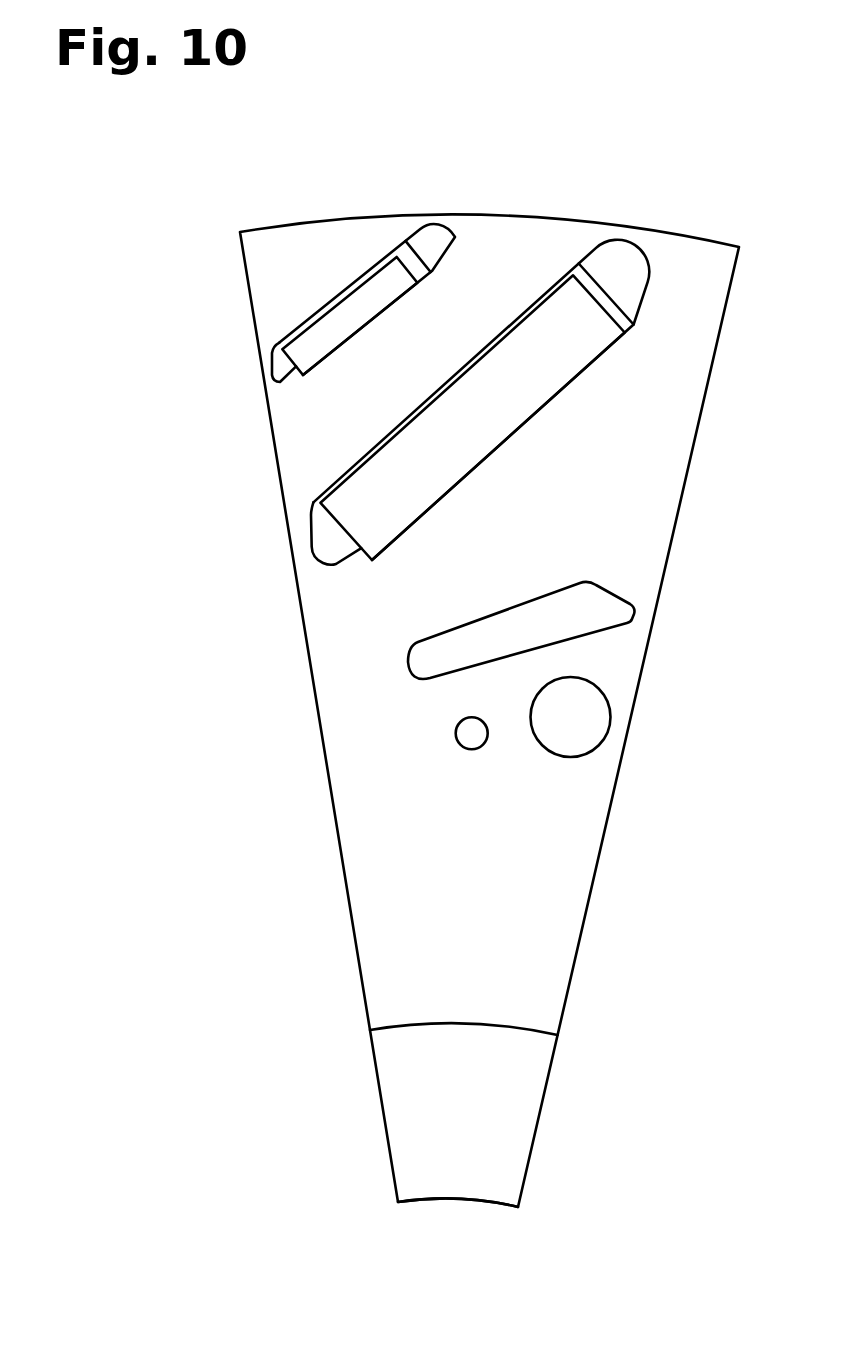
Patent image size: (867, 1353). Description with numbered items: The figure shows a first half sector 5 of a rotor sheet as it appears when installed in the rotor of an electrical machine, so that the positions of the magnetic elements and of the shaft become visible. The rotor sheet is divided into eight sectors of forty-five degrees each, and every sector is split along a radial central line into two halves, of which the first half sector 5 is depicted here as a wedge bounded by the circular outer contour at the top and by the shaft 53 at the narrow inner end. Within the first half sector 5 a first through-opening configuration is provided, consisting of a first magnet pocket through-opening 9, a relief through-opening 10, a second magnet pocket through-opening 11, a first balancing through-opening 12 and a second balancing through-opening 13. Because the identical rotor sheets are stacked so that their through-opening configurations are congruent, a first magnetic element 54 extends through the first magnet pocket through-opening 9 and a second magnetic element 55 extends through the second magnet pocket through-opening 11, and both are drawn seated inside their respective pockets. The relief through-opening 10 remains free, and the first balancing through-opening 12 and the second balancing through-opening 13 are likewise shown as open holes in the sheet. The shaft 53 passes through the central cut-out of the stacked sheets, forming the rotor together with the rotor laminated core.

The first half sector 5 is at (700, 180).
The first magnet pocket through-opening 9 is at (532, 270).
The relief through-opening 10 is at (640, 578).
The second magnet pocket through-opening 11 is at (295, 275).
The first balancing through-opening 12 is at (630, 676).
The second balancing through-opening 13 is at (420, 750).
The shaft 53 is at (468, 1185).
The first magnetic element 54 is at (580, 340).
The second magnetic element 55 is at (363, 302).